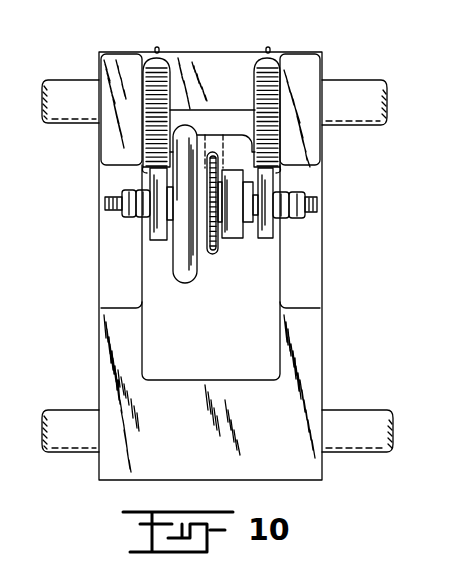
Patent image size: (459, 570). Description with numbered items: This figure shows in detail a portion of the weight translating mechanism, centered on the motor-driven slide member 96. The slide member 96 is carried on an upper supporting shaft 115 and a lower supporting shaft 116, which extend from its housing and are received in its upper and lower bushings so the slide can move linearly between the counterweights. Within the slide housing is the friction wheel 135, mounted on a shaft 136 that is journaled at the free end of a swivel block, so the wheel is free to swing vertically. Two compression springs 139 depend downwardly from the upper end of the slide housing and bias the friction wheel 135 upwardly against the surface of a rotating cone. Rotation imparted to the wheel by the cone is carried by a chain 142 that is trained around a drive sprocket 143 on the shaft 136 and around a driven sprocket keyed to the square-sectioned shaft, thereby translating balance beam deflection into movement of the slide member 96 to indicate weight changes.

The slide member 96 is at (331, 362).
The upper supporting shaft 115 is at (357, 86).
The lower supporting shaft 116 is at (72, 410).
The friction wheel 135 is at (188, 284).
The shaft 136 is at (168, 226).
The compression springs 139 is at (146, 76).
The chain 142 is at (219, 255).
The drive sprocket 143 is at (217, 246).